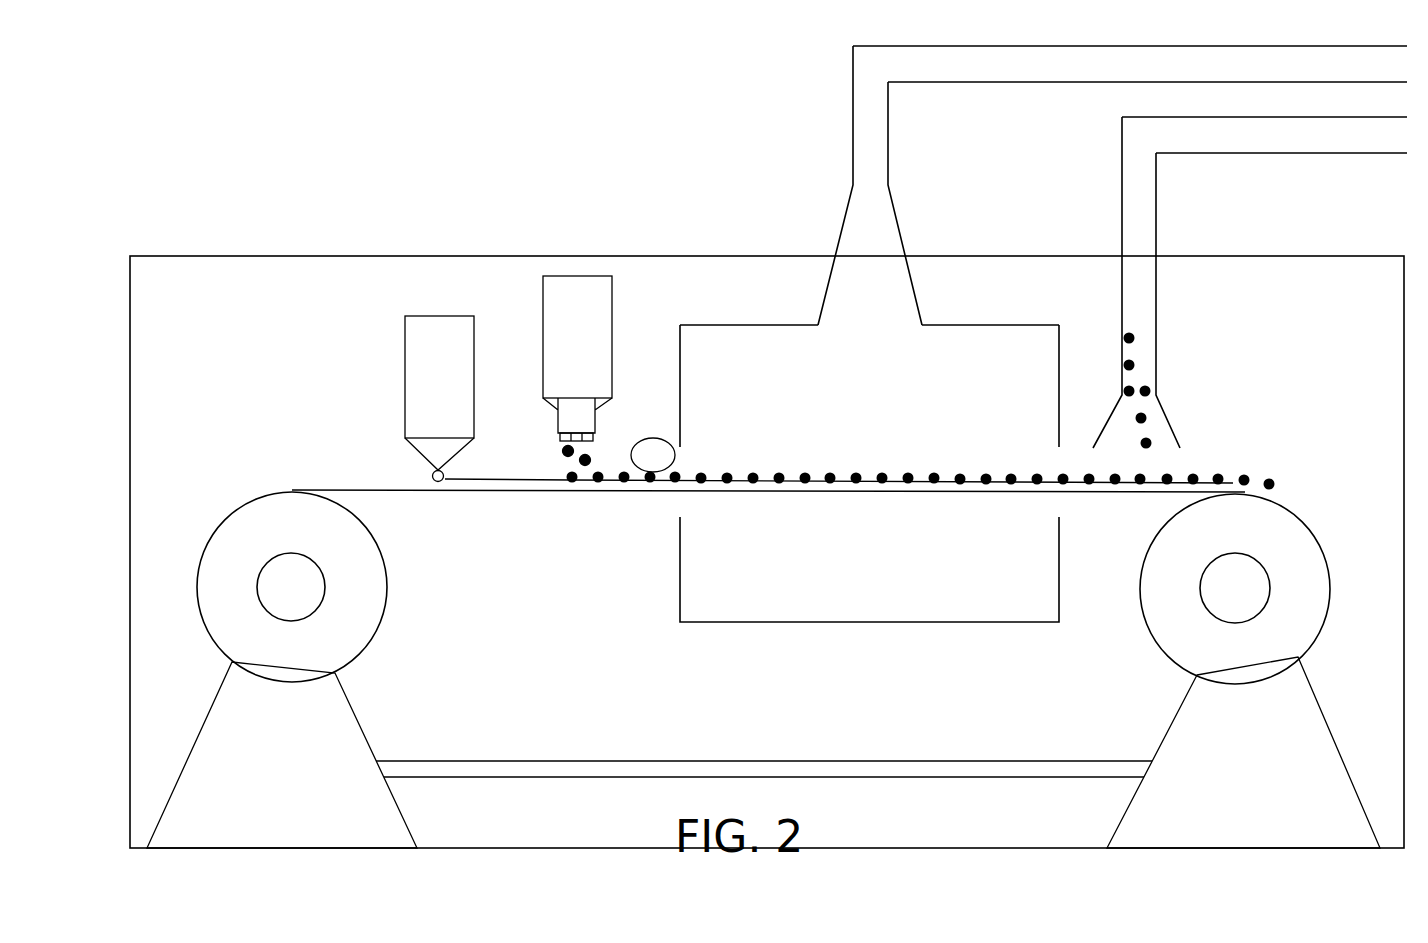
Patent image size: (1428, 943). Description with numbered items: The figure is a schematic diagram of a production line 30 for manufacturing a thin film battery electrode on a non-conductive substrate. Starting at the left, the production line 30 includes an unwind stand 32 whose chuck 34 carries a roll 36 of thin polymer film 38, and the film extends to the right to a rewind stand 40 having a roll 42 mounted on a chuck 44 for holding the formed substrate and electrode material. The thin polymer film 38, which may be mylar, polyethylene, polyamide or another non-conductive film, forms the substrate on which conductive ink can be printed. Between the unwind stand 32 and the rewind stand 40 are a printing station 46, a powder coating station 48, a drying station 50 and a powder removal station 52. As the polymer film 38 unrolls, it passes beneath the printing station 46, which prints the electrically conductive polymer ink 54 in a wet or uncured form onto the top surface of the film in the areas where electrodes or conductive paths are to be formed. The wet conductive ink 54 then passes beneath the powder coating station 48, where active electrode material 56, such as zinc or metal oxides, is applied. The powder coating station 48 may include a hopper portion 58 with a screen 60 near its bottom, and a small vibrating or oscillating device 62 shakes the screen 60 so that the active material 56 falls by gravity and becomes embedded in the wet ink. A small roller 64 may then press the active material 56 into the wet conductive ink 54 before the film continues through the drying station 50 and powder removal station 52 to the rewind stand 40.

The production line 30 is at (288, 255).
The unwind stand 32 is at (400, 810).
The chuck 34 is at (258, 585).
The roll 36 is at (250, 533).
The thin polymer film 38 is at (370, 488).
The rewind stand 40 is at (1327, 715).
The roll 42 is at (1162, 603).
The chuck 44 is at (1230, 598).
The printing station 46 is at (457, 297).
The powder coating station 48 is at (578, 296).
The drying station 50 is at (957, 323).
The powder removal station 52 is at (1117, 375).
The electrically conductive polymer ink 54 is at (500, 480).
The active electrode material 56 is at (627, 437).
The hopper portion 58 is at (577, 290).
The screen 60 is at (597, 477).
The vibrating or oscillating device 62 is at (568, 422).
The small roller 64 is at (653, 447).